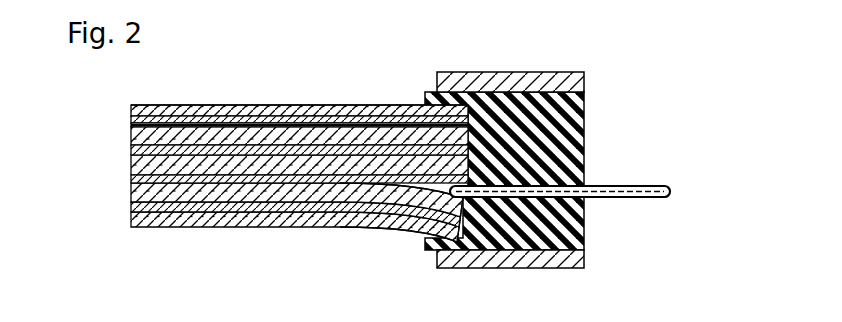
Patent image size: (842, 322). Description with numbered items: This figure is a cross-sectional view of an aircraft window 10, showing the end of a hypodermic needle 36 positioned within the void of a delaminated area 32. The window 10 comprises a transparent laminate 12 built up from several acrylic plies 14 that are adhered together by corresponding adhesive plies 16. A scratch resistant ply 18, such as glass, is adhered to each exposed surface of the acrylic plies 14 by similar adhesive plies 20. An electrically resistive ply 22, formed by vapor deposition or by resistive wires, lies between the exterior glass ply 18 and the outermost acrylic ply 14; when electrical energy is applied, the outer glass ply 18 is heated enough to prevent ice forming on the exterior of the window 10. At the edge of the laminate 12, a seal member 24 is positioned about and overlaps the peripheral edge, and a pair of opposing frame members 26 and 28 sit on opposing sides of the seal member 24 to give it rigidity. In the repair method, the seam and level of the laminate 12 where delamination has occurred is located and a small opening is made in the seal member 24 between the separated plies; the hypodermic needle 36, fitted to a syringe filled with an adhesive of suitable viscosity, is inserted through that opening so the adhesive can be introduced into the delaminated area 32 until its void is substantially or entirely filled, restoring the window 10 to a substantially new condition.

The aircraft window 10 is at (256, 158).
The transparent laminate 12 is at (228, 103).
The acrylic plies 14 is at (130, 138).
The adhesive plies 16 is at (131, 152).
The scratch resistant ply 18 is at (283, 105).
The adhesive plies 20 is at (130, 120).
The electrically resistive ply 22 is at (130, 125).
The seal member 24 is at (572, 227).
The frame member 26 is at (502, 72).
The frame member 28 is at (475, 262).
The delaminated area 32 is at (413, 232).
The hypodermic needle 36 is at (603, 186).